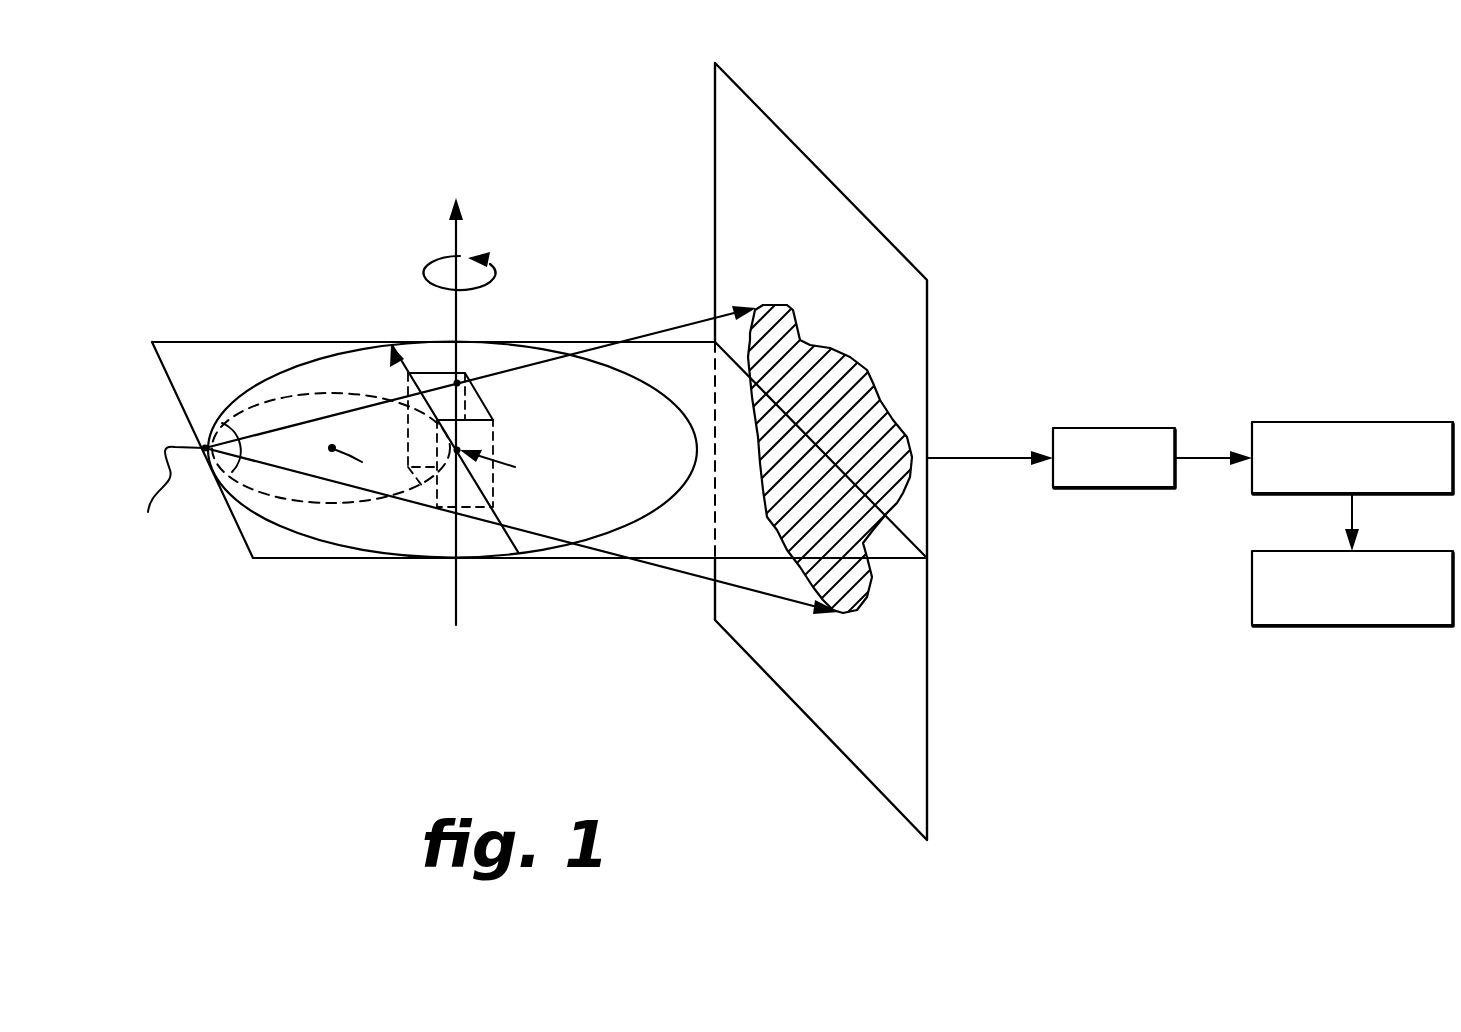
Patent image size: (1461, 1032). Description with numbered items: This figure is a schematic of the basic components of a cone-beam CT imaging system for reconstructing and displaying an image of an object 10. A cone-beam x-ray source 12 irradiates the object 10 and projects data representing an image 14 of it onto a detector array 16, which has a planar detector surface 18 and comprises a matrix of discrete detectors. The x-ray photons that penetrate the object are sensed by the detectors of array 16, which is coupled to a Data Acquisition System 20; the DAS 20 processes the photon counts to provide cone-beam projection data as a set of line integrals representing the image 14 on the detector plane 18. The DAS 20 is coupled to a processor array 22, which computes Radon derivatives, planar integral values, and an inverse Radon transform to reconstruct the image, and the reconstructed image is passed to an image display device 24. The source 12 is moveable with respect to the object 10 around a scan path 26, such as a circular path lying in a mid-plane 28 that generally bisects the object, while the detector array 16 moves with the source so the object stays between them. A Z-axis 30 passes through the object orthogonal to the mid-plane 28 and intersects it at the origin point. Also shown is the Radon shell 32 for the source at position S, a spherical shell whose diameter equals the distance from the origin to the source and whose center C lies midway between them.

The object 10 is at (487, 398).
The cone-beam x-ray source 12 is at (207, 445).
The image 14 is at (810, 347).
The detector array 16 is at (835, 182).
The planar detector surface 18 is at (820, 364).
The Data Acquisition System (DAS) 20 is at (1105, 428).
The processor array 22 is at (1345, 422).
The image display device 24 is at (1252, 580).
The scan path 26 is at (563, 350).
The mid-plane 28 is at (660, 556).
The Z-axis 30 is at (456, 234).
The Radon shell 32 is at (300, 363).